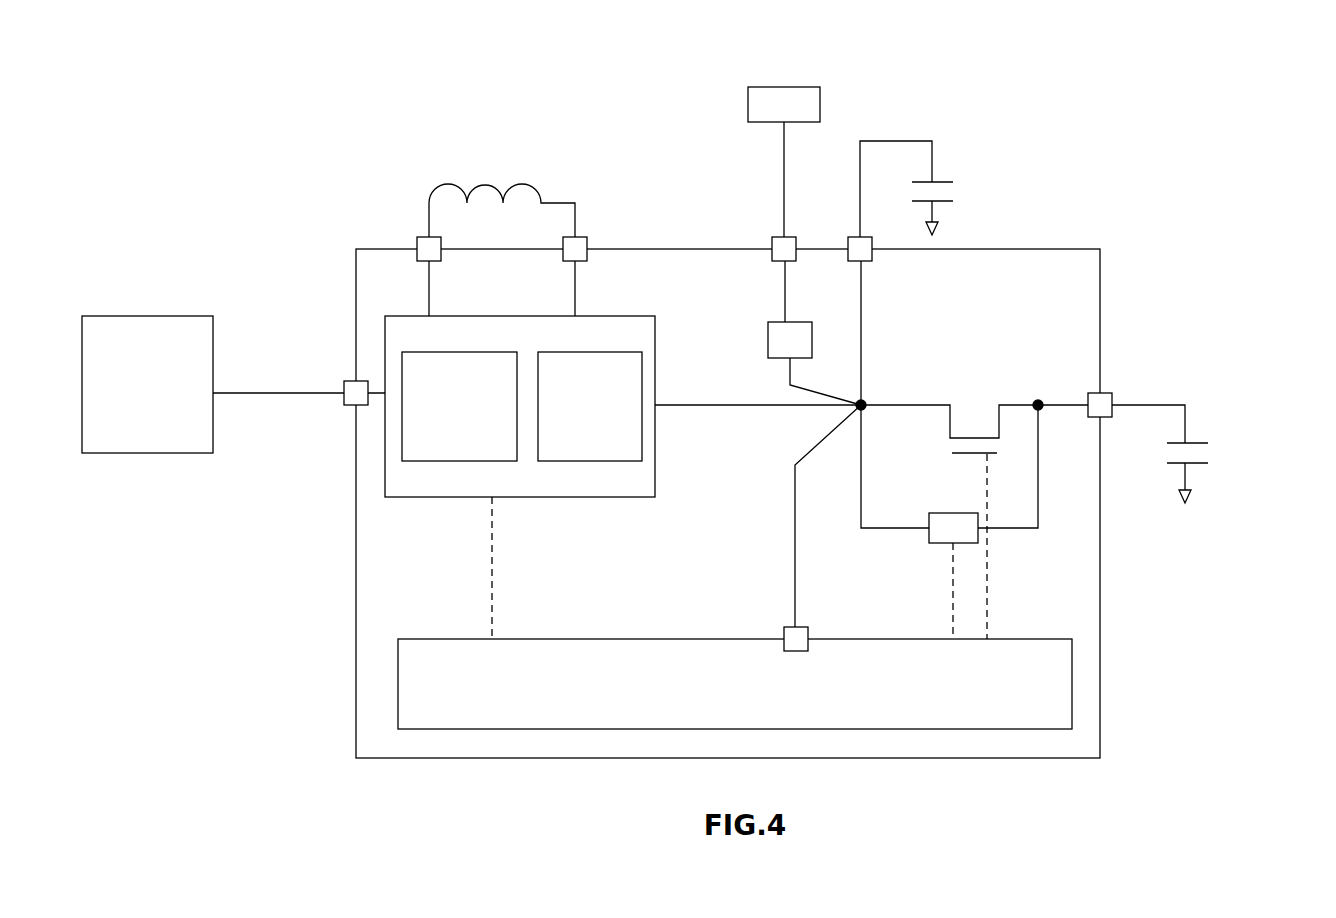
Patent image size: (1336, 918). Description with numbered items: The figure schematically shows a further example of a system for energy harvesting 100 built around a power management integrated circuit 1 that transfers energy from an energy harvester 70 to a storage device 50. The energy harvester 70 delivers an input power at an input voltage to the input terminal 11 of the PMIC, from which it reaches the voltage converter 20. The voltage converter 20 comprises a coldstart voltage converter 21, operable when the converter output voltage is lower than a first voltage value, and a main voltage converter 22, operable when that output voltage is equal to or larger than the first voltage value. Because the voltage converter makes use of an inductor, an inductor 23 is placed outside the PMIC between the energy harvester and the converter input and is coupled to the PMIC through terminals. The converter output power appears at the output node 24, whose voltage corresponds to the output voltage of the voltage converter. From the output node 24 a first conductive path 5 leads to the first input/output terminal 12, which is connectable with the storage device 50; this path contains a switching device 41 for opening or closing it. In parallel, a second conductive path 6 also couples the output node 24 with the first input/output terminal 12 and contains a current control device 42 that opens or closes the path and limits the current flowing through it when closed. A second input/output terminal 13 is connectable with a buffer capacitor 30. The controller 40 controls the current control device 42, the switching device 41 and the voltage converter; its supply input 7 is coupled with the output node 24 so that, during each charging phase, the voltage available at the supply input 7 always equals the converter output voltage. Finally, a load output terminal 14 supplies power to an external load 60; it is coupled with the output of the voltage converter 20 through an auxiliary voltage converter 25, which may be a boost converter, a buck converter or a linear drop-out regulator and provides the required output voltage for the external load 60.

The system for energy harvesting 100 is at (93, 173).
The power management integrated circuit 1 is at (357, 706).
The energy harvester 70 is at (148, 316).
The input terminal 11 is at (356, 381).
The voltage converter 20 is at (385, 493).
The coldstart voltage converter 21 is at (402, 430).
The main voltage converter 22 is at (592, 352).
The inductor 23 is at (541, 190).
The external load 60 is at (748, 105).
The load output terminal 14 is at (772, 245).
The second input/output terminal 13 is at (857, 242).
The buffer capacitor 30 is at (973, 192).
The auxiliary voltage converter 25 is at (768, 322).
The output node 24 is at (863, 400).
The first conductive path 5 is at (920, 405).
The first input/output terminal 12 is at (1103, 392).
The storage device 50 is at (1215, 450).
The switching device 41 is at (1007, 448).
The current control device 42 is at (978, 537).
The controller 40 is at (1072, 683).
The second conductive path 6 is at (908, 528).
The supply input 7 is at (797, 625).